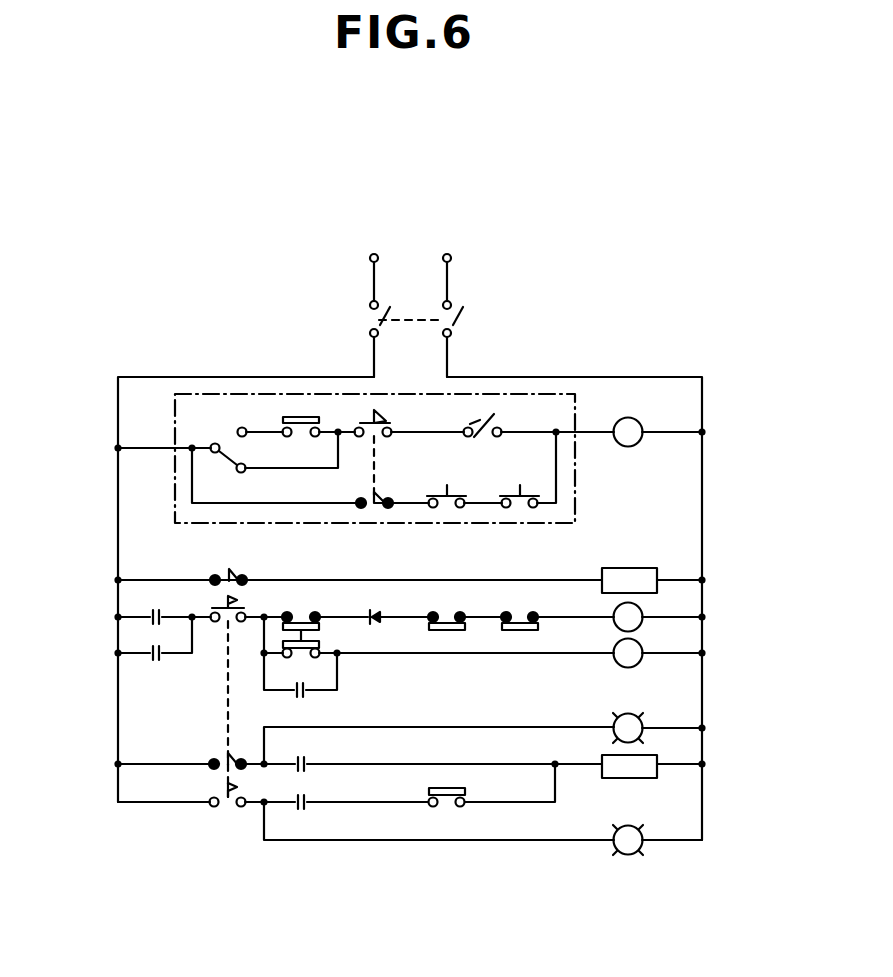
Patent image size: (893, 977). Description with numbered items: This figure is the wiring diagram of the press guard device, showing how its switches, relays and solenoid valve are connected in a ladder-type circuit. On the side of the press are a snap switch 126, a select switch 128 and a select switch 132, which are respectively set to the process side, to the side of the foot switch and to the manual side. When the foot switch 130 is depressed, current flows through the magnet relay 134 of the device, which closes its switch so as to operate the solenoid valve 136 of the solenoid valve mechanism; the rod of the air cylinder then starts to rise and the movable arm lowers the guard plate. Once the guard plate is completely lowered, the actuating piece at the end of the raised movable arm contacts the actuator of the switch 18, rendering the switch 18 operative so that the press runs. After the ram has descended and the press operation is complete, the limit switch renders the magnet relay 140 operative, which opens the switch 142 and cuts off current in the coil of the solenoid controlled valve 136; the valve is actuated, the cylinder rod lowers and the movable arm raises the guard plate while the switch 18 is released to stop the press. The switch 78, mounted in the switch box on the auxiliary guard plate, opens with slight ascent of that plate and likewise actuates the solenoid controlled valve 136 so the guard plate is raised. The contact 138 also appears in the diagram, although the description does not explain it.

The switch 18 is at (445, 807).
The switch 78 is at (523, 631).
The snap switch 126 is at (219, 442).
The select switch 128 is at (387, 427).
The foot switch 130 is at (490, 423).
The select switch 132 is at (222, 572).
The magnet relay 134 is at (628, 430).
The solenoid valve 136 is at (633, 587).
The relay contact 138 is at (298, 613).
The magnet relay 140 is at (630, 662).
The switch 142 is at (372, 623).